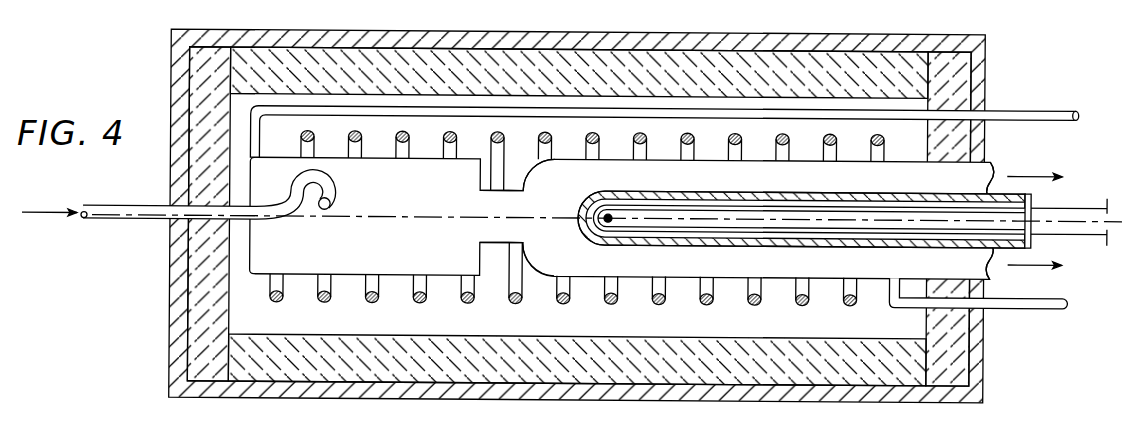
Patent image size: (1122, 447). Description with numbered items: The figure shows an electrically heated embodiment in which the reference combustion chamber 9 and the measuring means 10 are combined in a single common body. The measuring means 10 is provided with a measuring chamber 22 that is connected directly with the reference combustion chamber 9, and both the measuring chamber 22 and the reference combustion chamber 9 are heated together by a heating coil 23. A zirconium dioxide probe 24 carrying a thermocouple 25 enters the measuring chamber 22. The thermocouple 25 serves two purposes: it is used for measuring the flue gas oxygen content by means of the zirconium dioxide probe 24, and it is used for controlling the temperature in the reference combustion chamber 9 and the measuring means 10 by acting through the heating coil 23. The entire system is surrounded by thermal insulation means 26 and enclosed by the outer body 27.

The reference combustion chamber 9 is at (396, 162).
The measuring means 10 is at (968, 178).
The measuring chamber 22 is at (545, 162).
The heating coil 23 is at (386, 286).
The zirconium dioxide probe 24 is at (657, 245).
The thermocouple 25 is at (608, 215).
The thermal insulation means 26 is at (243, 357).
The body 27 is at (968, 362).